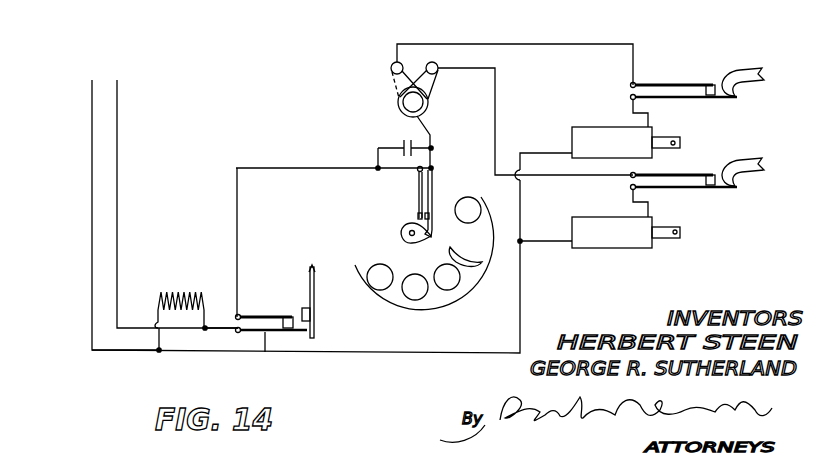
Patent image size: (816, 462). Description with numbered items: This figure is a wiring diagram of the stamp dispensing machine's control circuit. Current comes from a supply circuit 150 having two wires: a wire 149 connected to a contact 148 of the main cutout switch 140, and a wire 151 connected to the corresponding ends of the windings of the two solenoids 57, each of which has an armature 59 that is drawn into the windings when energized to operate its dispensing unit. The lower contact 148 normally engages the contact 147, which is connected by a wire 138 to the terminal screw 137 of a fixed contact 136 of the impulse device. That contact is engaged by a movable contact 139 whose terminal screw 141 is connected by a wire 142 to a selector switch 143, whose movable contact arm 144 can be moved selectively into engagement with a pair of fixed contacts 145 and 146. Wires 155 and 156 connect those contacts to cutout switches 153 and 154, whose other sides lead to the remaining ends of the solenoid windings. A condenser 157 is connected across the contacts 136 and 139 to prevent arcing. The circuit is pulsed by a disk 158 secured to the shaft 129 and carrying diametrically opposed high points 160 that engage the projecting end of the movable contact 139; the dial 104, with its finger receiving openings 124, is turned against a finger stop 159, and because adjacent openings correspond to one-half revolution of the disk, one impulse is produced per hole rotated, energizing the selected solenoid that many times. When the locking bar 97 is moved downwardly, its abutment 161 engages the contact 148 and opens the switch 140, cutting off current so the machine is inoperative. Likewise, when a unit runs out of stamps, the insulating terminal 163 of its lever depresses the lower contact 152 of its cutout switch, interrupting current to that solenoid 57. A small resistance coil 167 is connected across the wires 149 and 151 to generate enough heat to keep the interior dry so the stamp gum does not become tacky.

The solenoid 57 is at (594, 136).
The armature 59 is at (667, 139).
The locking bar 97 is at (315, 283).
The dial 104 is at (389, 304).
The finger receiving openings 124 is at (445, 292).
The shaft 129 is at (407, 229).
The fixed contact 136 is at (417, 204).
The terminal screw 137 is at (418, 175).
The wire 138 is at (274, 166).
The movable contact 139 is at (435, 201).
The main cutout switch 140 is at (274, 311).
The terminal screw 141 is at (434, 168).
The wire 142 is at (433, 138).
The selector switch 143 is at (423, 104).
The movable contact arm 144 is at (430, 84).
The fixed contact 145 is at (436, 63).
The fixed contact 146 is at (390, 65).
The contact 147 is at (262, 315).
The contact 148 is at (265, 353).
The wire 149 is at (222, 328).
The supply circuit 150 is at (104, 187).
The wire 151 is at (183, 352).
The lower contact 152 is at (683, 98).
The cutout switch 153 is at (699, 171).
The cutout switch 154 is at (697, 80).
The wire 155 is at (551, 172).
The wire 156 is at (551, 48).
The condenser 157 is at (404, 140).
The disk 158 is at (406, 243).
The finger stop 159 is at (470, 258).
The high points 160 is at (402, 237).
The abutment 161 is at (303, 310).
The terminal 163 is at (741, 68).
The resistance coil 167 is at (178, 292).